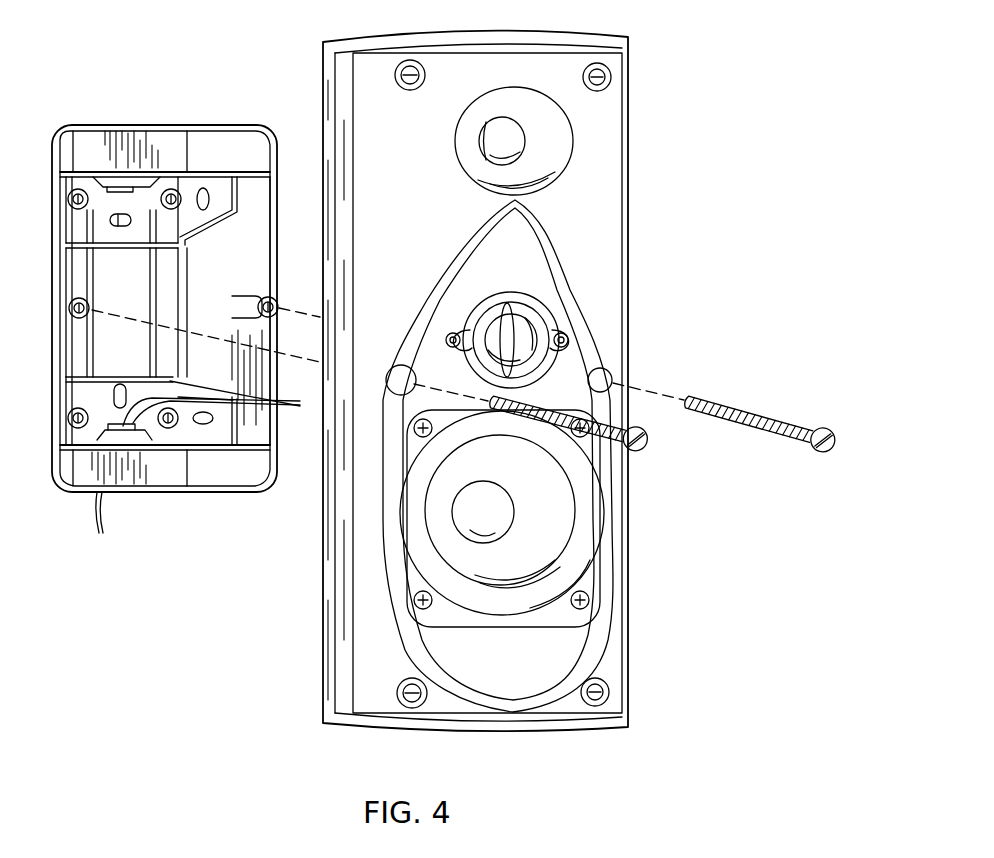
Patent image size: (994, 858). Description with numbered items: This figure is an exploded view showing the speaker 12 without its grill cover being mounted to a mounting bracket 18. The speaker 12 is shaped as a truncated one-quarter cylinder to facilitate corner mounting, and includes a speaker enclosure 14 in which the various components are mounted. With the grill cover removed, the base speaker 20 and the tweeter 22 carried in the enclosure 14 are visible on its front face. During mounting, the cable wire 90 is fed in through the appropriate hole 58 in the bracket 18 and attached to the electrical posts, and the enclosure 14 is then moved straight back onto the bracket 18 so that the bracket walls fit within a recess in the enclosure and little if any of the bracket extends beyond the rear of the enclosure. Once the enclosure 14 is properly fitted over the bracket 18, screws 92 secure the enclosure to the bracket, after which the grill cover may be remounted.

The speaker 12 is at (280, 663).
The speaker enclosure 14 is at (618, 159).
The mounting bracket 18 is at (233, 97).
The base speaker 20 is at (600, 513).
The tweeter 22 is at (537, 327).
The hole 58 is at (134, 418).
The cable wire 90 is at (100, 521).
The screws 92 is at (744, 410).